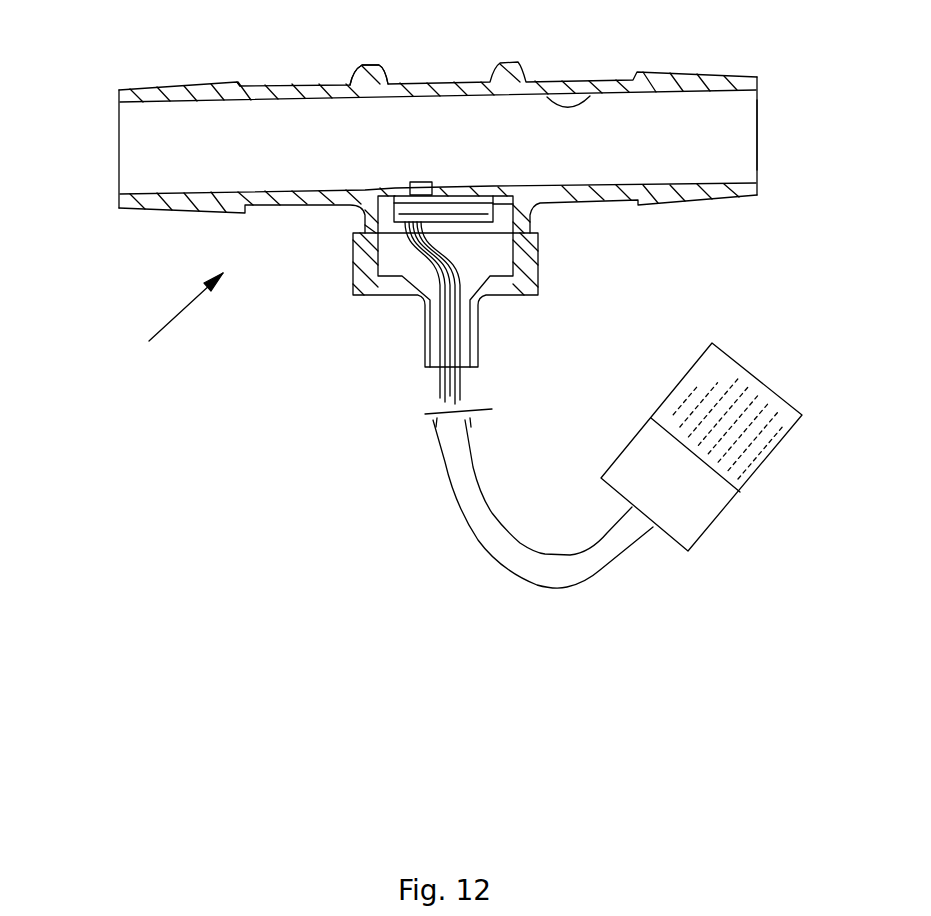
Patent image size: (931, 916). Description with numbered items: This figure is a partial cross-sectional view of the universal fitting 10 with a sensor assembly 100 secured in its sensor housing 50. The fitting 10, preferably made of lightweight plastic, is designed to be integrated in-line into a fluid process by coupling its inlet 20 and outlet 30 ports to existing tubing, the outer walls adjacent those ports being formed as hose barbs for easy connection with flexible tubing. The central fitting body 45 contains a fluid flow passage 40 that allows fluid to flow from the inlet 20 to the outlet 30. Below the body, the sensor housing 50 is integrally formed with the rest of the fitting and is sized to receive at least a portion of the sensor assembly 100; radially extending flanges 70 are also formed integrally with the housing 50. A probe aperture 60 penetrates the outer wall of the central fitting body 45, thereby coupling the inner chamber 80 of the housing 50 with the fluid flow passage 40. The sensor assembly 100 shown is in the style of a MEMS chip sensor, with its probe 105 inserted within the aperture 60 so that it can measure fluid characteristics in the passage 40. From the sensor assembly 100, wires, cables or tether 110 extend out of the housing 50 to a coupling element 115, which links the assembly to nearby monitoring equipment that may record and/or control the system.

The fitting 10 is at (170, 331).
The inlet port 20 is at (119, 150).
The outlet port 30 is at (758, 128).
The fluid flow passage 40 is at (586, 100).
The central fitting body 45 is at (281, 97).
The sensor housing 50 is at (353, 257).
The probe aperture 60 is at (405, 196).
The radially extending flanges 70 is at (363, 63).
The inner chamber 80 is at (503, 214).
The sensor assembly 100 is at (473, 208).
The probe 105 is at (425, 182).
The tether 110 is at (470, 500).
The coupling element 115 is at (693, 488).